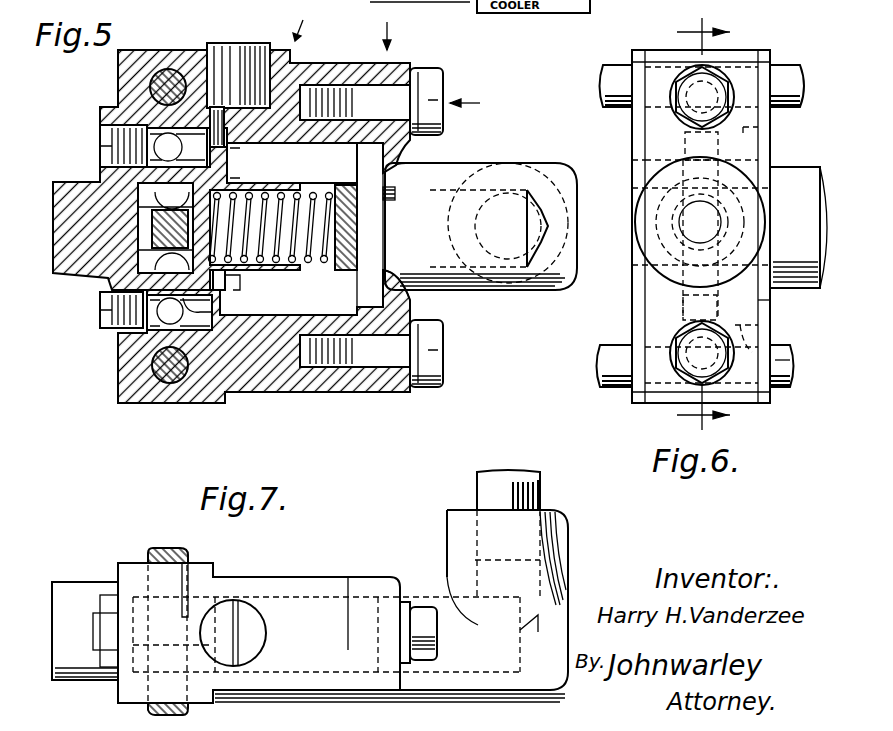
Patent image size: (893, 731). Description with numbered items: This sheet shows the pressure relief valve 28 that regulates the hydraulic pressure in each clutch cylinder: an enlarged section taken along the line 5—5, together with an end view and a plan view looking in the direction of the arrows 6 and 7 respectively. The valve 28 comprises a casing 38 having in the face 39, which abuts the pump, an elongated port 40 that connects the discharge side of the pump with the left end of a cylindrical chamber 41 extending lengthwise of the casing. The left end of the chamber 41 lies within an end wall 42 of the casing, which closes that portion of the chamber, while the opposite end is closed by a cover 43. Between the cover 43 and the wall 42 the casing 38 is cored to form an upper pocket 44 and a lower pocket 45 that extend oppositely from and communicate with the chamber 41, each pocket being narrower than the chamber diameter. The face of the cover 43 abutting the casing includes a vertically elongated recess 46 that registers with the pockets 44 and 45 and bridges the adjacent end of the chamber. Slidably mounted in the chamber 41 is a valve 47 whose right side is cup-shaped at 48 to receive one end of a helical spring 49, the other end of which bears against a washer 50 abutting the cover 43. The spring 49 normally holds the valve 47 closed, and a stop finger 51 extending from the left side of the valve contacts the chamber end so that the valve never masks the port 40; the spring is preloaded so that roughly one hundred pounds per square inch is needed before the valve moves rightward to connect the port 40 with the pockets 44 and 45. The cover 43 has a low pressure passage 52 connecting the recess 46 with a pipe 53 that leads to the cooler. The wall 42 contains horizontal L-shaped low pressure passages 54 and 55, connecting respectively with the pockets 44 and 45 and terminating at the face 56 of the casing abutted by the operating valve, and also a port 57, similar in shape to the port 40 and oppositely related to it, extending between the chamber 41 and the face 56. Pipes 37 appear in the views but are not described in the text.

In FIG. 6, the section line 5— 5 is at (702, 222).
In FIG. 5, the arrow 6 is at (475, 102).
In FIG. 5, the arrow 7 is at (400, 36).
In FIG. 5, the valve 28 is at (306, 20).
In FIG. 5, the pipe 37 is at (165, 68).
In FIG. 6, the pipe 37 is at (602, 72).
In FIG. 7, the pipe 37 is at (178, 553).
In FIG. 5, the casing 38 is at (327, 64).
In FIG. 6, the casing 38 is at (702, 97).
In FIG. 6, the face 39 is at (632, 327).
In FIG. 7, the face 39 is at (303, 703).
In FIG. 6, the elongated port 40 is at (643, 265).
In FIG. 7, the elongated port 40 is at (484, 600).
In FIG. 5, the cylindrical chamber 41 is at (115, 270).
In FIG. 6, the cylindrical chamber 41 is at (640, 218).
In FIG. 7, the cylindrical chamber 41 is at (140, 593).
In FIG. 5, the end wall 42 is at (118, 110).
In FIG. 5, the cover 43 is at (403, 143).
In FIG. 5, the upper pocket 44 is at (330, 167).
In FIG. 6, the upper pocket 44 is at (632, 160).
In FIG. 5, the lower pocket 45 is at (263, 268).
In FIG. 6, the lower pocket 45 is at (685, 297).
In FIG. 5, the vertically elongated recess 46 is at (410, 307).
In FIG. 5, the valve 47 is at (213, 292).
In FIG. 5, the cup-shaped portion 48 is at (226, 274).
In FIG. 5, the helical spring 49 is at (308, 263).
In FIG. 5, the washer 50 is at (342, 270).
In FIG. 5, the stop finger 51 is at (113, 210).
In FIG. 5, the low pressure passage 52 is at (383, 192).
In FIG. 7, the low pressure passage 52 is at (425, 597).
In FIG. 5, the pipe 53 is at (512, 185).
In FIG. 6, the pipe 53 is at (827, 200).
In FIG. 7, the pipe 53 is at (540, 497).
In FIG. 5, the low pressure passage 54 is at (237, 152).
In FIG. 6, the low pressure passage 54 is at (745, 127).
In FIG. 7, the low pressure passage 54 is at (188, 573).
In FIG. 5, the low pressure passage 55 is at (198, 313).
In FIG. 6, the low pressure passage 55 is at (792, 363).
In FIG. 6, the face 56 is at (770, 330).
In FIG. 7, the face 56 is at (330, 567).
In FIG. 5, the port 57 is at (110, 300).
In FIG. 6, the port 57 is at (752, 312).